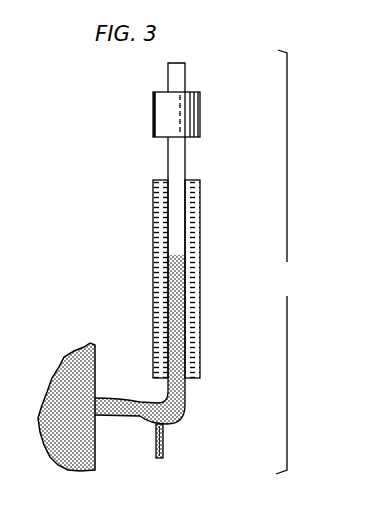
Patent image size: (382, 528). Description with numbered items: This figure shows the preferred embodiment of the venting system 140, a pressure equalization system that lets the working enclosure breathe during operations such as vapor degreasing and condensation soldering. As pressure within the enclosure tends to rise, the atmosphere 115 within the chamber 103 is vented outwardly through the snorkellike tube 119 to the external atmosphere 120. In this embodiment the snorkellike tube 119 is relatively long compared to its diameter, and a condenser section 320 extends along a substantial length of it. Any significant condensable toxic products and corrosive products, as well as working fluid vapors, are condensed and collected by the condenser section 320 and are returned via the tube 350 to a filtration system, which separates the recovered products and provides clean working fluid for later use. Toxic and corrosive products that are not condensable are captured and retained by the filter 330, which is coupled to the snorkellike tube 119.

The chamber 103 is at (97, 346).
The atmosphere 115 is at (67, 440).
The snorkellike tube 119 is at (186, 405).
The external atmosphere 120 is at (185, 63).
The venting system 140 is at (297, 287).
The condenser section 320 is at (200, 236).
The filter 330 is at (200, 114).
The tube 350 is at (164, 448).